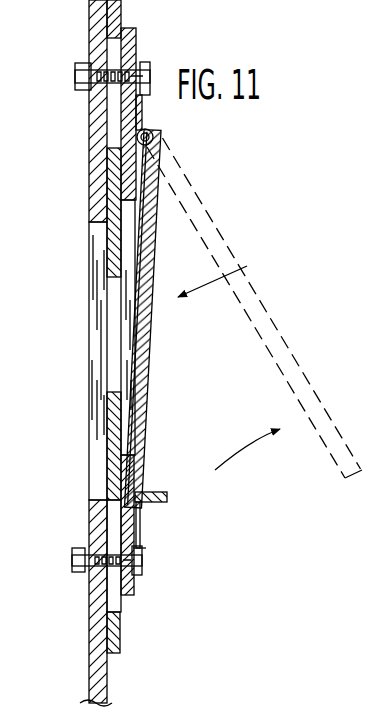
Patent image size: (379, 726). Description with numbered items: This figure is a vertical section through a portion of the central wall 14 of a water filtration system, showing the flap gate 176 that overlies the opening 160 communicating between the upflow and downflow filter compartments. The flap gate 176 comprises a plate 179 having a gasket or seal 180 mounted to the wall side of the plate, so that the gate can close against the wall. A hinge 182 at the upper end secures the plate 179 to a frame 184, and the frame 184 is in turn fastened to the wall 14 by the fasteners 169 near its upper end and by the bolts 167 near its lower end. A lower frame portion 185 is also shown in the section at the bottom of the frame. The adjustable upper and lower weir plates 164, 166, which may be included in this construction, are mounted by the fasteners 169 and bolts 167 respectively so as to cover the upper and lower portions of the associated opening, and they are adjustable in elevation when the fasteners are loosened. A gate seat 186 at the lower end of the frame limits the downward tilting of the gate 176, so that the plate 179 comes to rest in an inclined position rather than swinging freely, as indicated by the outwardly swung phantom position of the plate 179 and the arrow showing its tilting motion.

The central wall 14 is at (89, 642).
The opening 160 is at (97, 333).
The upper weir plate 164 is at (123, 16).
The lower weir plate 166 is at (120, 635).
The bolts 167 is at (83, 553).
The fasteners 169 is at (80, 73).
The flap gate 176 is at (229, 357).
The plate 179 is at (173, 352).
The gasket or seal 180 is at (175, 388).
The hinge 182 is at (150, 130).
The frame 184 is at (137, 49).
The lower frame portion 185 is at (134, 587).
The gate seat 186 is at (152, 505).